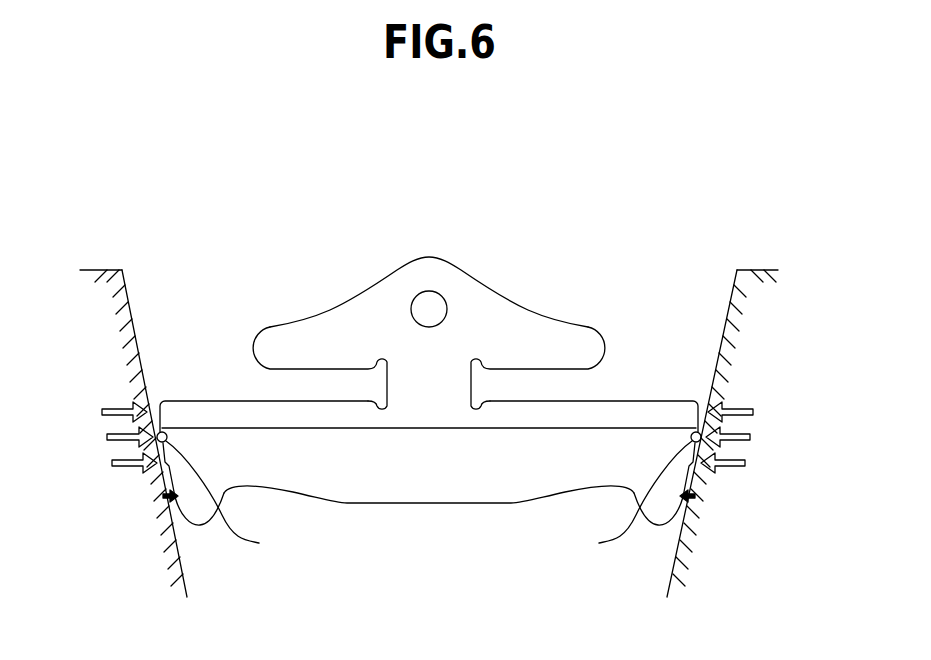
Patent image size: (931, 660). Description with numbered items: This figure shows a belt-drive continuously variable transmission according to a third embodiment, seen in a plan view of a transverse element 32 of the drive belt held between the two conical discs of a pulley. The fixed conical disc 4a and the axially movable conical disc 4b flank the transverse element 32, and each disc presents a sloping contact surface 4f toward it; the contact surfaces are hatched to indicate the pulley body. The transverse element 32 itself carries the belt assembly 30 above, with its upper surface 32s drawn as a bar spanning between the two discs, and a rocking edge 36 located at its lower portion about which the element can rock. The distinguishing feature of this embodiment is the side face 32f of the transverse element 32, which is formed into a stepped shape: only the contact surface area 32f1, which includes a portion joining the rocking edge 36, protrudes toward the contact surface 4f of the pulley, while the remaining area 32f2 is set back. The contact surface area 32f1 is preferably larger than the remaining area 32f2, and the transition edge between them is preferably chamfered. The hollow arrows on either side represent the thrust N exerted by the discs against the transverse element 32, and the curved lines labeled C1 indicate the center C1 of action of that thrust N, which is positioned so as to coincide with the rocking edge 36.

The cam plate / holding member 30 is at (505, 270).
The transverse element 32 is at (340, 288).
The upper surface of spring plate 32s is at (243, 400).
The contact surface area 32f1 is at (162, 399).
The remaining area 32f2 is at (170, 478).
The side face 32f is at (176, 497).
The rocking edge 36 is at (397, 428).
The contact surface 4f is at (155, 396).
The conical disc 4b is at (108, 316).
The conical disc 4a is at (827, 317).
The thrust N is at (430, 437).
The center of action C1 is at (429, 502).